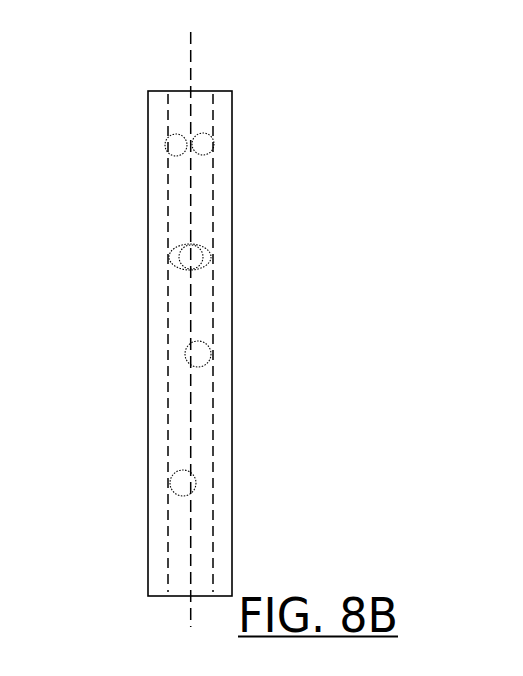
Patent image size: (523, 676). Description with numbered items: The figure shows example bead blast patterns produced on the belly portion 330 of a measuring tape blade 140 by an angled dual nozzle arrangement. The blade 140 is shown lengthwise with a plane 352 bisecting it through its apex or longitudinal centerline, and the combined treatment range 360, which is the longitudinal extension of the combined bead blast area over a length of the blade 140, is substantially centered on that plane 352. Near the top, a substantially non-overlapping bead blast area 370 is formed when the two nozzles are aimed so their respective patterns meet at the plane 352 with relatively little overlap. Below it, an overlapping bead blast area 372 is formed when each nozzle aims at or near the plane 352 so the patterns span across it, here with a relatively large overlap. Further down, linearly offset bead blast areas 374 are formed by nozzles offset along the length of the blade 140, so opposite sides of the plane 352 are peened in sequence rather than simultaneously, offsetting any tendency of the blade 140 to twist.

The blade 140 is at (129, 343).
The plane bisecting the blade 352 is at (152, 329).
The combined treatment range 360 is at (263, 343).
The belly portion 330 is at (234, 343).
The substantially non-overlapping bead blast area 370 is at (135, 166).
The overlapping bead blast area 372 is at (130, 278).
The linearly offset bead blast area 374 is at (249, 432).